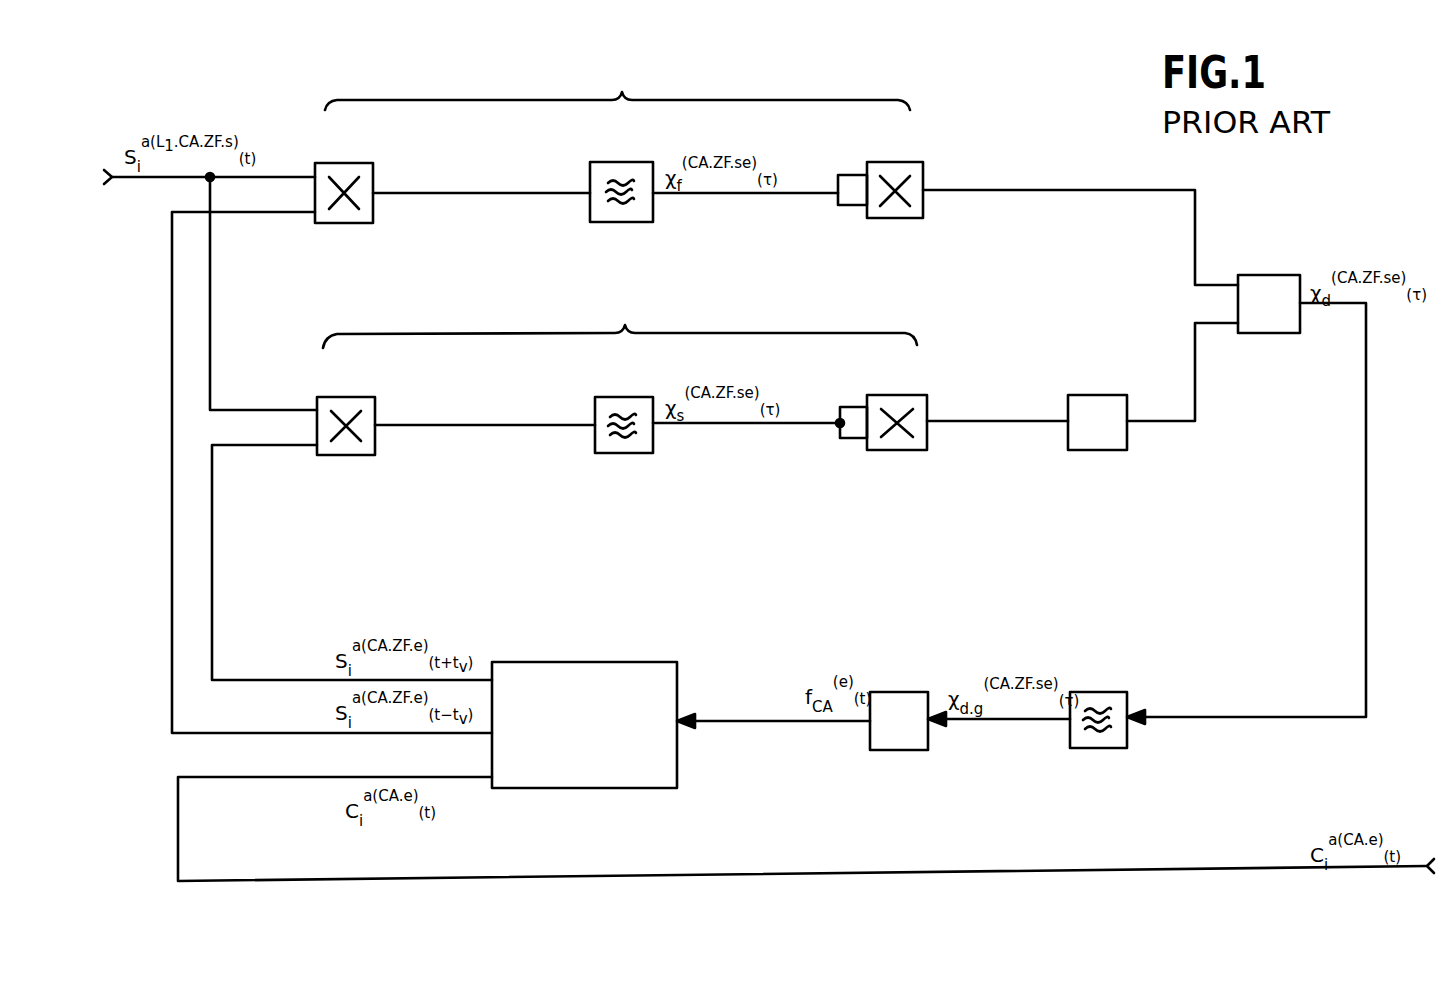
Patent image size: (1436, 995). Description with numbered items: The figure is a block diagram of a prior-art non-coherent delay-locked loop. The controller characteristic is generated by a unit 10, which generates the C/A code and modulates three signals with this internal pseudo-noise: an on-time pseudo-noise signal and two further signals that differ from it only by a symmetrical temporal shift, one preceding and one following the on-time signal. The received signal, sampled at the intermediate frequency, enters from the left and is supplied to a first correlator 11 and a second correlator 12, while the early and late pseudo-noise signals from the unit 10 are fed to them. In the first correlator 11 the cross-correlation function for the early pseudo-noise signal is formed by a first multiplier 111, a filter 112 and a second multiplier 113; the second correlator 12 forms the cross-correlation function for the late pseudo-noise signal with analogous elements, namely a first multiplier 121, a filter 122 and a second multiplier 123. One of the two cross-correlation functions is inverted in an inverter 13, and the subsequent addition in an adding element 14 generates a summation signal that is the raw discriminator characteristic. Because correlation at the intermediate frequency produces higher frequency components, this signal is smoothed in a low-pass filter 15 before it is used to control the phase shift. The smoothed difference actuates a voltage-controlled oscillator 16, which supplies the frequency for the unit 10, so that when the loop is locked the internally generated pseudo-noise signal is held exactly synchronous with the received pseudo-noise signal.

The C/A code generating unit 10 is at (577, 788).
The first correlator 11 is at (617, 84).
The second correlator 12 is at (620, 318).
The first multiplier 111 is at (348, 223).
The filter 112 is at (625, 222).
The second multiplier 113 is at (895, 218).
The first multiplier 121 is at (345, 455).
The filter 122 is at (625, 453).
The second multiplier 123 is at (897, 450).
The inverter 13 is at (1098, 450).
The adding element 14 is at (1270, 333).
The low-pass filter 15 is at (1100, 748).
The voltage-controlled oscillator 16 is at (903, 750).